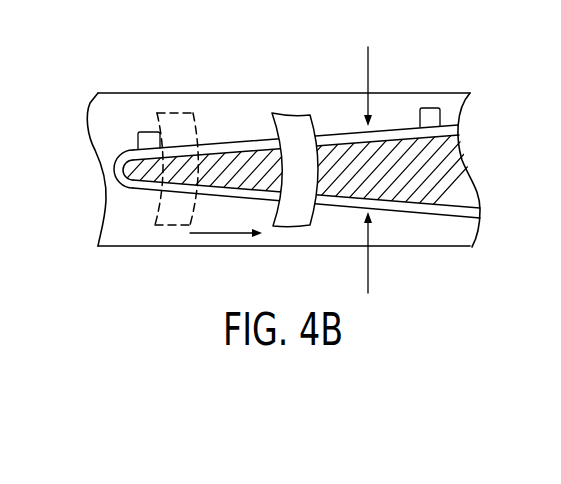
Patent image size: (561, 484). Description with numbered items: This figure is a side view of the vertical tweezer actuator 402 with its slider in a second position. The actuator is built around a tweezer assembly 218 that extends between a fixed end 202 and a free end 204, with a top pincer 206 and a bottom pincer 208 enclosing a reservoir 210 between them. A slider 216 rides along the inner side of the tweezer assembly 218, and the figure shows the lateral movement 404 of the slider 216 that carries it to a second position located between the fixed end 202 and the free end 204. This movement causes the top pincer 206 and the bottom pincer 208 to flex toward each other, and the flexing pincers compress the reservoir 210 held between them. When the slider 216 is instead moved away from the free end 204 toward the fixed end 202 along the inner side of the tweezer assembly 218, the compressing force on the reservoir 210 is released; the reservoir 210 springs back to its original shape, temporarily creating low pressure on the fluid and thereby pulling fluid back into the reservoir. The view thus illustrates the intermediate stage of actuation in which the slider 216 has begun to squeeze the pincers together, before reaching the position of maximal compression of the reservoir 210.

The vertical tweezer actuator 402 is at (68, 94).
The fixed end 202 is at (112, 180).
The free end 204 is at (480, 191).
The top pincer 206 is at (403, 124).
The bottom pincer 208 is at (450, 218).
The reservoir 210 is at (453, 170).
The slider 216 is at (297, 113).
The tweezer assembly 218 is at (410, 247).
The lateral movement 404 is at (218, 233).